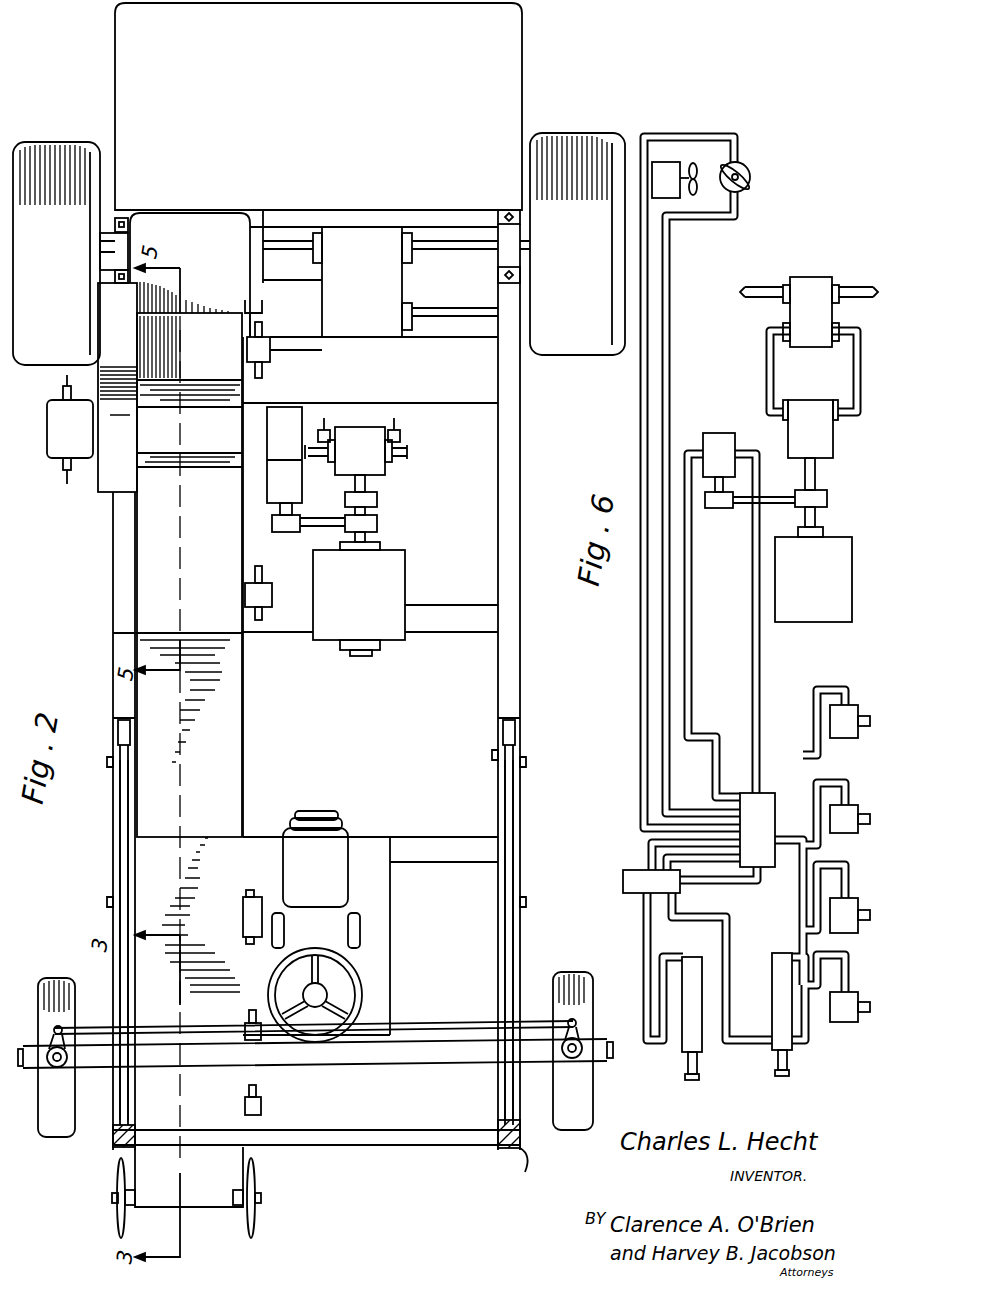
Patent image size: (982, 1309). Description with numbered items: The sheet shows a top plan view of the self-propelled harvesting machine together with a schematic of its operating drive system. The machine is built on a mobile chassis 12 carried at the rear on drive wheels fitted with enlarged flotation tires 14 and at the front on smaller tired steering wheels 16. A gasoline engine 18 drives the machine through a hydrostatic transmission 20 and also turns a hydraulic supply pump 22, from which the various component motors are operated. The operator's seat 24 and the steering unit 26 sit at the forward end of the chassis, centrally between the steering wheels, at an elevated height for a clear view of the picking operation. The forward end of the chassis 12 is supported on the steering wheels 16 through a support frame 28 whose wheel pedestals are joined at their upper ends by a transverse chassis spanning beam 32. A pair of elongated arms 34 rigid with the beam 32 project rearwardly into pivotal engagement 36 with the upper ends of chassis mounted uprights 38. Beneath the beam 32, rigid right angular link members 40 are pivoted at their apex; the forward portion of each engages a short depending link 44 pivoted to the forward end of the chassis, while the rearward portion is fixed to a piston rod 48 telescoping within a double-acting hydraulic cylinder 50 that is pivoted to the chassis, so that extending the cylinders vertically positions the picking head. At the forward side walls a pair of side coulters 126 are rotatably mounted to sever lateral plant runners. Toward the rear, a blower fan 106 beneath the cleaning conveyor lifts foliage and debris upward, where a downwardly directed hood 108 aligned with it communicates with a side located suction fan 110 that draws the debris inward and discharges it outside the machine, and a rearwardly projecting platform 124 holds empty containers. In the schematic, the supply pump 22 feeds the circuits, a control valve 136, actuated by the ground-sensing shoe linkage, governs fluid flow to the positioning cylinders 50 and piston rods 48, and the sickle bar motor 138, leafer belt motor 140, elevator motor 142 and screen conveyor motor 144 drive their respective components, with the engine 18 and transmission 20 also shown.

In FIG. 2, the mobile chassis 12 is at (507, 635).
In FIG. 2, the flotation tires 14 is at (566, 165).
In FIG. 2, the front steering wheels 16 is at (50, 978).
In FIG. 2, the gasoline engine 18 is at (387, 560).
In FIG. 6, the gasoline engine 18 is at (821, 590).
In FIG. 2, the hydrostatic transmission 20 is at (358, 453).
In FIG. 6, the hydrostatic transmission 20 is at (768, 368).
In FIG. 2, the hydraulic supply pump 22 is at (283, 475).
In FIG. 6, the hydraulic supply pump 22 is at (727, 450).
In FIG. 2, the operator's seat 24 is at (302, 853).
In FIG. 2, the steering unit 26 is at (366, 998).
In FIG. 2, the support frame 28 is at (462, 1074).
In FIG. 2, the transverse chassis spanning beam 32 is at (267, 1060).
In FIG. 2, the elongated arms 34 is at (126, 810).
In FIG. 2, the pivotal engagement 36 is at (493, 753).
In FIG. 2, the chassis mounted uprights 38 is at (116, 733).
In FIG. 2, the right angular link members 40 is at (126, 1099).
In FIG. 2, the short depending link 44 is at (522, 1150).
In FIG. 6, the piston rod 48 is at (694, 1074).
In FIG. 6, the double-acting hydraulic cylinder 50 is at (785, 1032).
In FIG. 6, the blower fan 106 is at (748, 163).
In FIG. 2, the hood 108 is at (240, 410).
In FIG. 2, the suction fan 110 is at (115, 473).
In FIG. 6, the suction fan 110 is at (674, 178).
In FIG. 2, the rearwardly projecting platform 124 is at (135, 117).
In FIG. 2, the side coulters 126 is at (118, 1222).
In FIG. 6, the control valve 136 is at (636, 882).
In FIG. 6, the sickle bar motor 138 is at (850, 1016).
In FIG. 6, the leafer belt motor 140 is at (846, 912).
In FIG. 6, the elevator motor 142 is at (845, 822).
In FIG. 6, the screen conveyor motor 144 is at (845, 724).